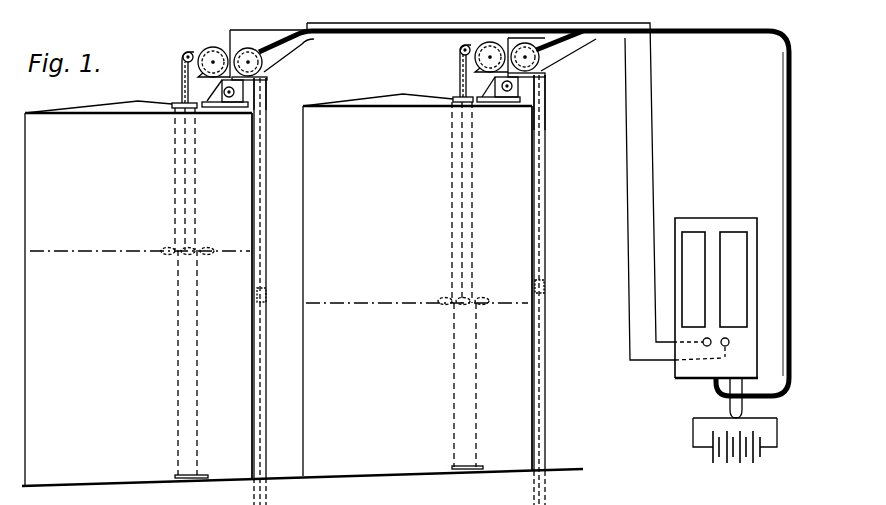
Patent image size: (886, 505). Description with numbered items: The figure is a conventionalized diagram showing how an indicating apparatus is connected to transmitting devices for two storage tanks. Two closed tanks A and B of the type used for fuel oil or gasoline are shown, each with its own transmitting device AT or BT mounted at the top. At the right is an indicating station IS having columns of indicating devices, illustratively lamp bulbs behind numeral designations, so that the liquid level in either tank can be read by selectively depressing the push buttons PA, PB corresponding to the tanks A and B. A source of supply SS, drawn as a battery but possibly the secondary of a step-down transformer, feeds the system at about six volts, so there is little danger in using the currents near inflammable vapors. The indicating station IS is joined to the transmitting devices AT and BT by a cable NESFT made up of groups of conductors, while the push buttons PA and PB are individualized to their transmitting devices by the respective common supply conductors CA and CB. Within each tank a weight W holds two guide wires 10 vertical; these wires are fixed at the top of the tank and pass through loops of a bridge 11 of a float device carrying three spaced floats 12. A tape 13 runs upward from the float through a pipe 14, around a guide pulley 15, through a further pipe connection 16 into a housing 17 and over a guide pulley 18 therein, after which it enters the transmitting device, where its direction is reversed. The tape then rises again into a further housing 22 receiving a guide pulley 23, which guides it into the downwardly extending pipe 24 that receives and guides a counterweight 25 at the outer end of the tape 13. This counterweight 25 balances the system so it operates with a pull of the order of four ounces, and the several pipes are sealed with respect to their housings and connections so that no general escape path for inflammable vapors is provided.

The guide wires 10 is at (196, 372).
The bridge 11 is at (163, 244).
The floats 12 is at (196, 259).
The tape 13 is at (180, 175).
The pipe 14 is at (181, 82).
The guide pulley 15 is at (184, 53).
The pipe connection 16 is at (194, 51).
The housing 17 is at (213, 62).
The guide pulley 18 is at (537, 46).
The housing 22 is at (263, 56).
The guide pulley 23 is at (272, 63).
The pipe 24 is at (267, 92).
The counterweight 25 is at (264, 300).
The tank A is at (138, 293).
The tank B is at (417, 285).
The weight W is at (176, 475).
The transmitting device AT is at (228, 100).
The transmitting device BT is at (498, 92).
The common supply conductor CA is at (654, 77).
The common supply conductor CB is at (627, 78).
The indicating station IS is at (701, 218).
The push button PA is at (704, 345).
The push button PB is at (723, 346).
The source of supply SS is at (735, 433).
The cable NESFT is at (789, 98).